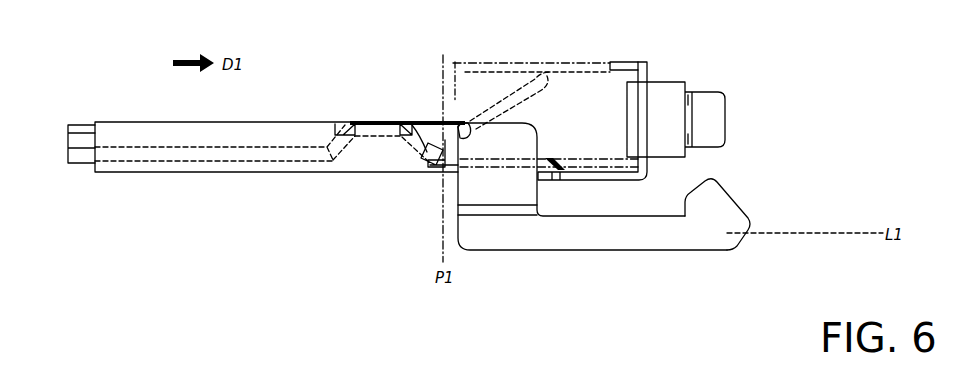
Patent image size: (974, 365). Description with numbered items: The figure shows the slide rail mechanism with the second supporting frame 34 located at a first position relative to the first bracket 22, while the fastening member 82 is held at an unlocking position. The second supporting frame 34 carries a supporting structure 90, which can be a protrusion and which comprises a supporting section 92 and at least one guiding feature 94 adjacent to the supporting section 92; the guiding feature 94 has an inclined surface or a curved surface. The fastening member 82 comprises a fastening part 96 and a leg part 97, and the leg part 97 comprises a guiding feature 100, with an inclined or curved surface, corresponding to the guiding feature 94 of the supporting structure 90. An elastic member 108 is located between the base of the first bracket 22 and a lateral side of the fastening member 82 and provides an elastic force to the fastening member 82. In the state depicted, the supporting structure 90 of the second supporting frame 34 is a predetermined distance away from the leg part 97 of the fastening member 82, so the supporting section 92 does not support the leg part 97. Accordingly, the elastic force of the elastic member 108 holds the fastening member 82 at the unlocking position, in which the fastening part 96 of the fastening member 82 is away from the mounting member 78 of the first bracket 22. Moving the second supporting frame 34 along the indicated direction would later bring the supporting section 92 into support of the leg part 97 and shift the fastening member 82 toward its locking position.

The first bracket 22 is at (292, 174).
The second supporting frame 34 is at (77, 121).
The mounting member 78 is at (672, 105).
The fastening member 82 is at (664, 258).
The supporting structure 90 is at (374, 147).
The supporting section 92 is at (370, 125).
The guiding feature 94 is at (415, 128).
The fastening part 96 is at (714, 212).
The leg part 97 is at (463, 118).
The guiding feature 100 is at (446, 162).
The elastic member 108 is at (553, 77).